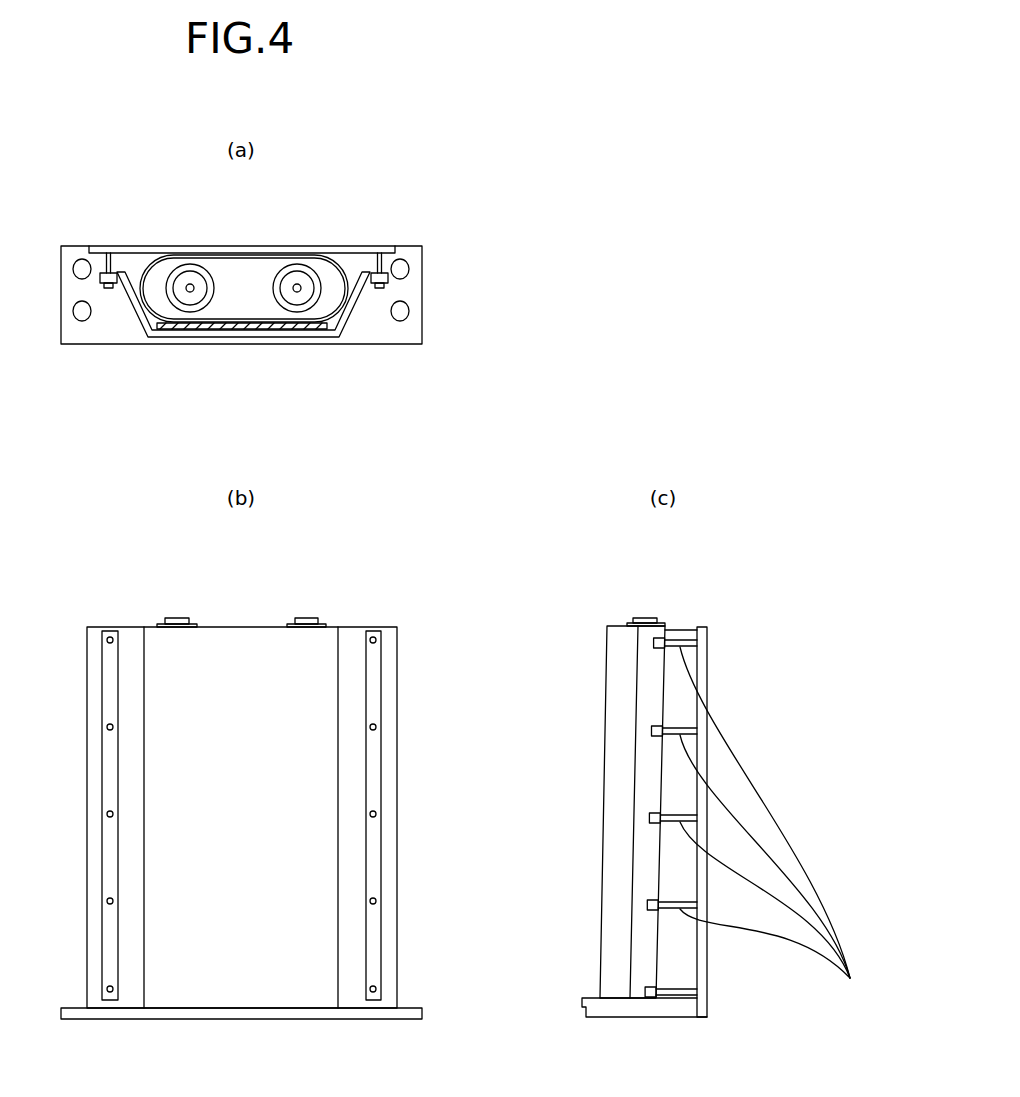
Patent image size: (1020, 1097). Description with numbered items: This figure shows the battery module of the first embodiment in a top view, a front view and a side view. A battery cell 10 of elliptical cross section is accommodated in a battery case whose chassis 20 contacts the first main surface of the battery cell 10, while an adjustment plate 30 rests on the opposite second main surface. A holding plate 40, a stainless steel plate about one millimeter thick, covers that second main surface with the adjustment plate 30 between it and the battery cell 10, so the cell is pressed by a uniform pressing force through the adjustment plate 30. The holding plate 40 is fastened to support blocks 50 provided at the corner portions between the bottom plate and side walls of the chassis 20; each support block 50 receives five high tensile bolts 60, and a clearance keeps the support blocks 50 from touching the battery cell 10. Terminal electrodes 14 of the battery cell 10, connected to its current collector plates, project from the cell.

The battery cell 10 is at (236, 282).
The terminal electrode 14 is at (190, 282).
The chassis 20 is at (424, 284).
The adjustment plate 30 is at (297, 329).
The holding plate 40 is at (222, 345).
The support block 50 is at (681, 640).
The bolt 60 is at (771, 827).